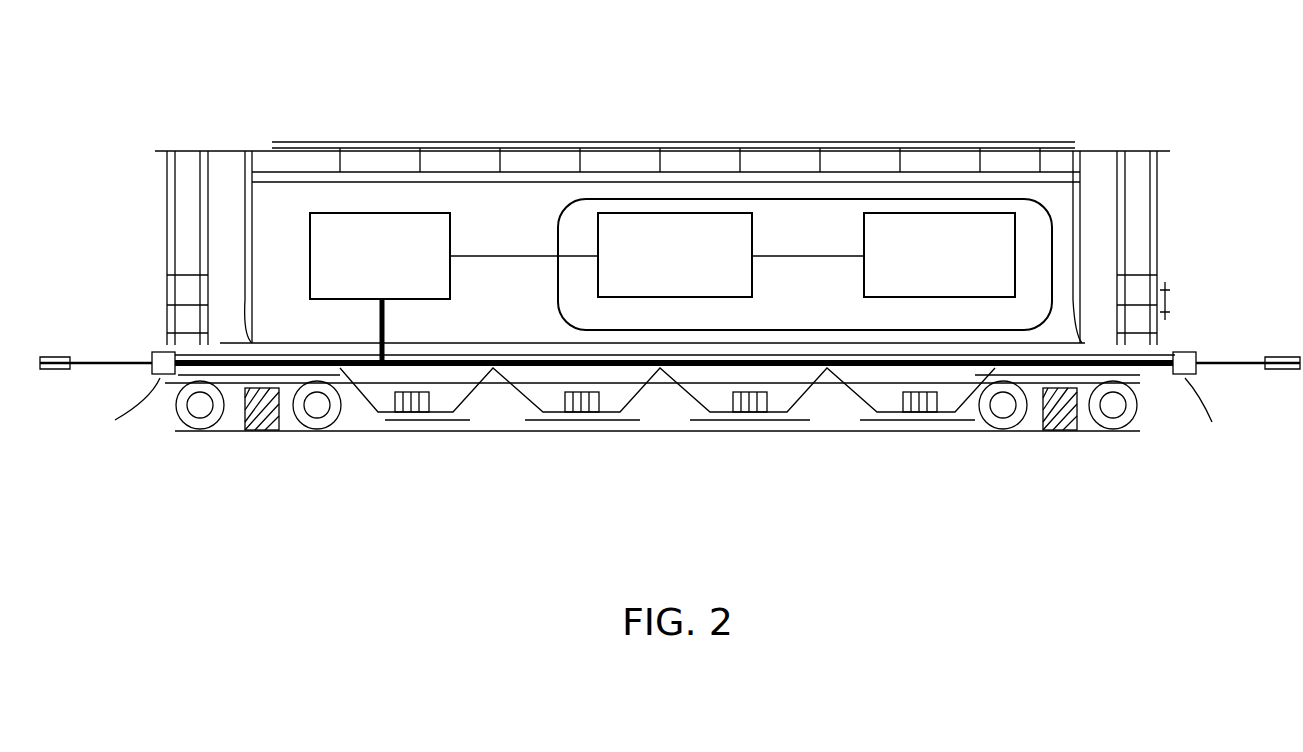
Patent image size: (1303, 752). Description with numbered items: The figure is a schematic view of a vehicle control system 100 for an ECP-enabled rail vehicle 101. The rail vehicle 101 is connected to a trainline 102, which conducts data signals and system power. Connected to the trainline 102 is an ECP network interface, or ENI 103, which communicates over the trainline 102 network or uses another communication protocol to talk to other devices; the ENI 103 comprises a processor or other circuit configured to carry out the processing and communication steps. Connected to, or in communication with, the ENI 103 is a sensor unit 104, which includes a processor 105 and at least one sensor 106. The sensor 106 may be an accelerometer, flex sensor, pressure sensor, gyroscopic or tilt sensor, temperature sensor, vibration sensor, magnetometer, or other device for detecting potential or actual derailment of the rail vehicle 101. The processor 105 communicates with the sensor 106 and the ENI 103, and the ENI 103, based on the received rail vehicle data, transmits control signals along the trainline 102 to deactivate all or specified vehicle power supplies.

The vehicle control system 100 is at (690, 533).
The rail vehicle 101 is at (225, 146).
The trainline 102 is at (120, 350).
The ECP network interface (ENI) 103 is at (394, 213).
The sensor unit 104 is at (791, 188).
The processor 105 is at (657, 213).
The sensor 106 is at (918, 213).